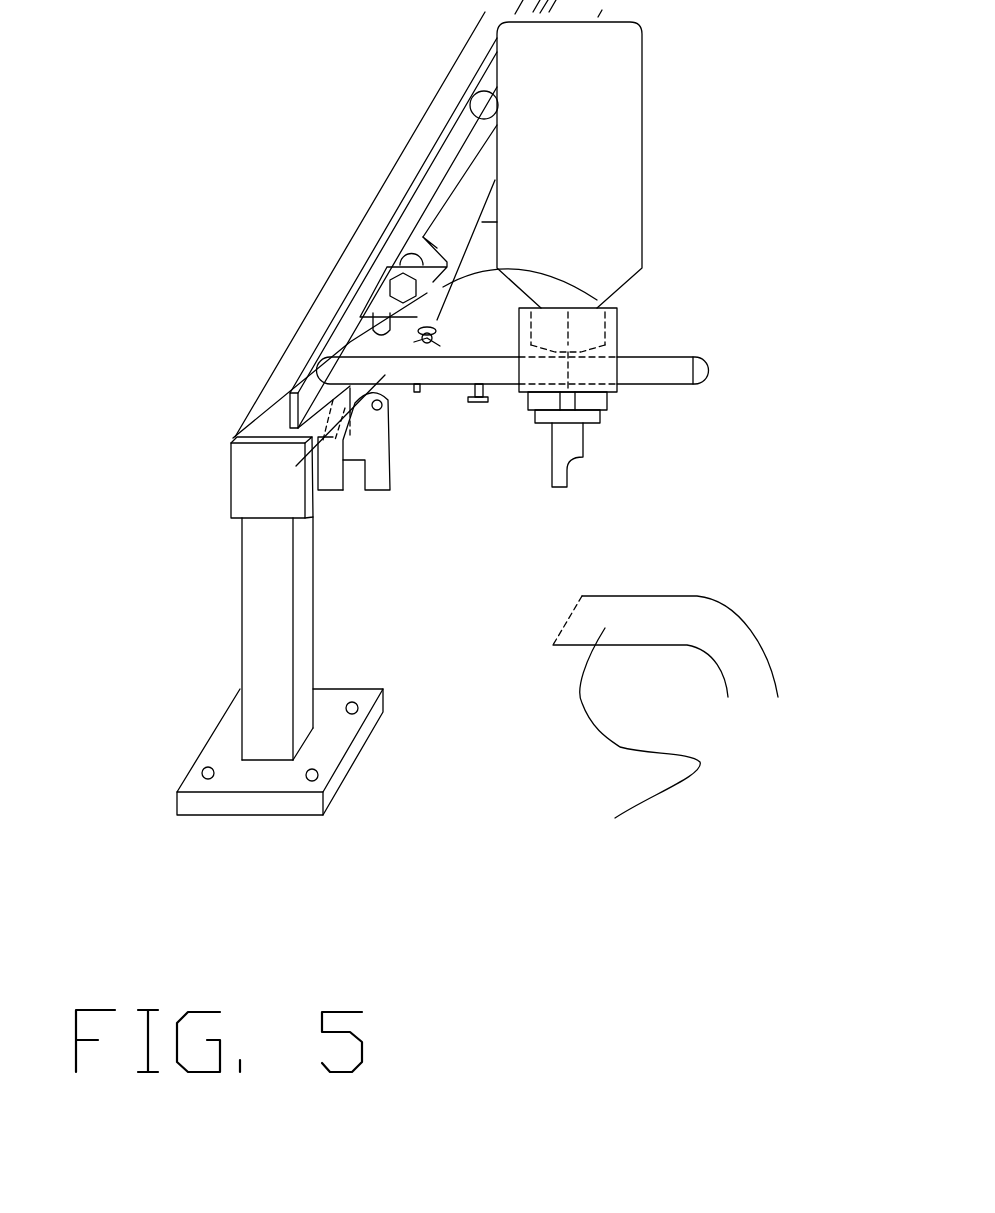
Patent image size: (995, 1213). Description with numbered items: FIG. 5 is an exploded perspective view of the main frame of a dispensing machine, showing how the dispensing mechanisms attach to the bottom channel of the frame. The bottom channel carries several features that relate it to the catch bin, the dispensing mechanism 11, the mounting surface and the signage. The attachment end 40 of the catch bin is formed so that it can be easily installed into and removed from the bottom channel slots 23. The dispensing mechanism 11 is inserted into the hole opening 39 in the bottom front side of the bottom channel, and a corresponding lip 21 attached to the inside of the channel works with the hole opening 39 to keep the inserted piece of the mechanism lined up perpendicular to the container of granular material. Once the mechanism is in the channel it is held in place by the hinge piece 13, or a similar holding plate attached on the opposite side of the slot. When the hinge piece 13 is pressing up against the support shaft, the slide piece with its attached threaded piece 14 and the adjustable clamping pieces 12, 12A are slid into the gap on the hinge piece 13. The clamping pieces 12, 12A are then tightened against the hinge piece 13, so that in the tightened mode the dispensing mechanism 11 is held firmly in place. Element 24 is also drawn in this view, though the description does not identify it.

The dispensing mechanism 11 is at (633, 347).
The adjustable clamping piece 12 is at (235, 437).
The adjustable clamping piece 12A is at (372, 358).
The hinge piece 13 is at (390, 433).
The threaded piece 14 is at (420, 318).
The lip 21 is at (617, 322).
The bottom channel slots 23 is at (378, 478).
The bracket 24 is at (378, 285).
The hole opening 39 is at (305, 418).
The attachment end 40 is at (644, 726).